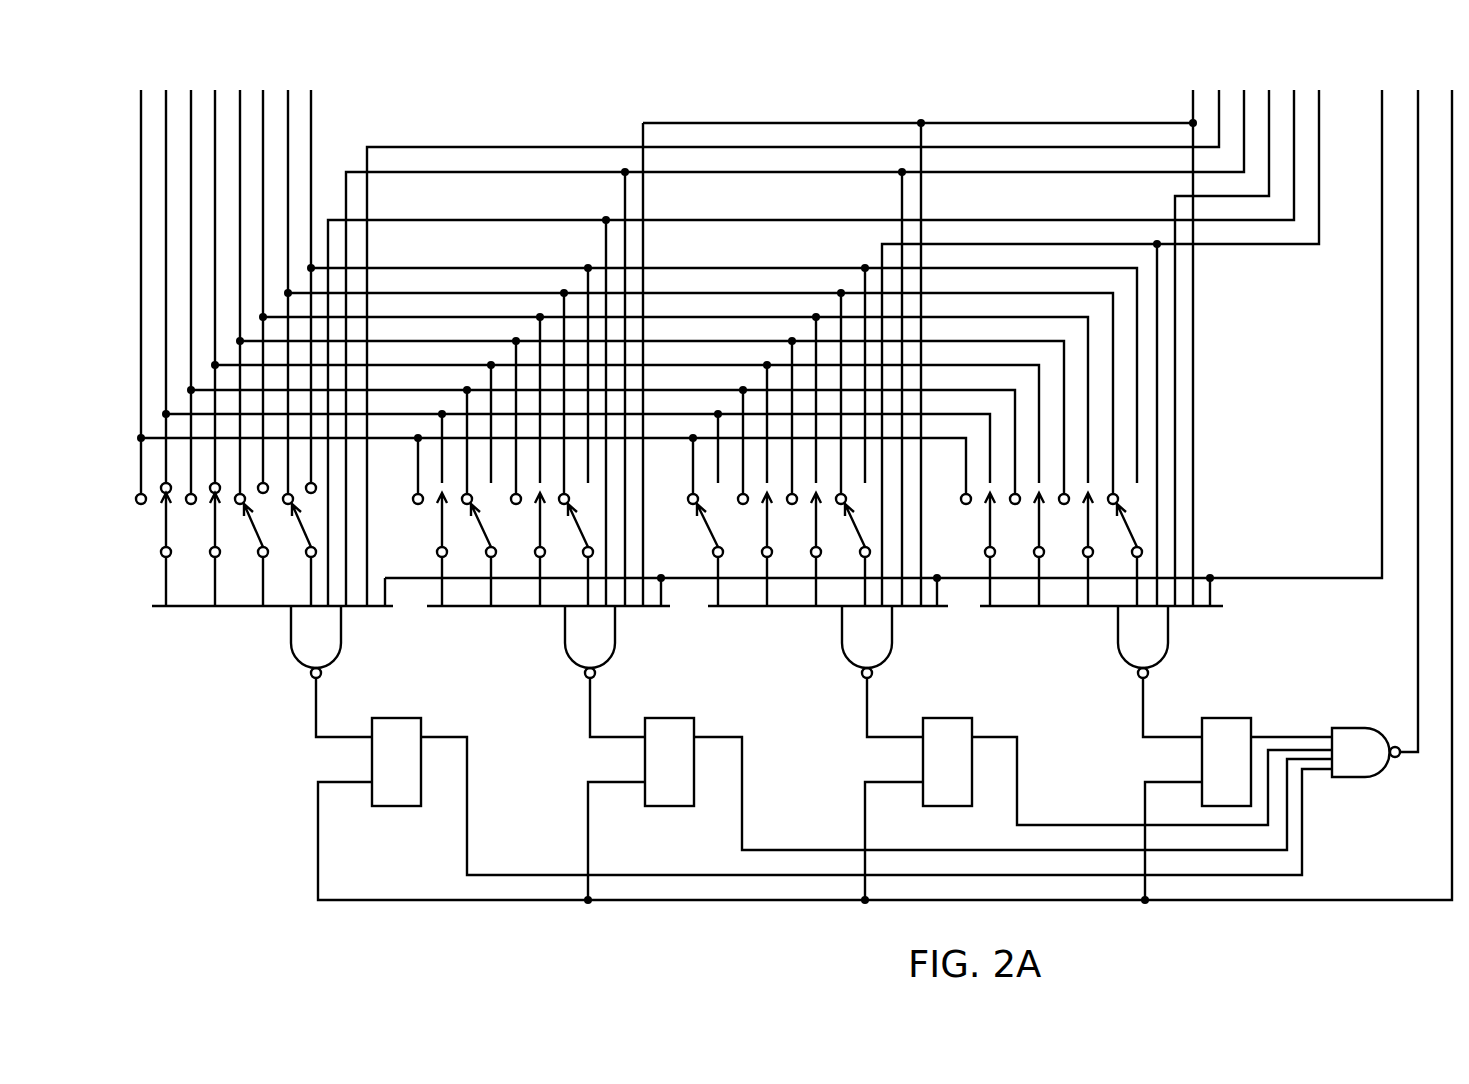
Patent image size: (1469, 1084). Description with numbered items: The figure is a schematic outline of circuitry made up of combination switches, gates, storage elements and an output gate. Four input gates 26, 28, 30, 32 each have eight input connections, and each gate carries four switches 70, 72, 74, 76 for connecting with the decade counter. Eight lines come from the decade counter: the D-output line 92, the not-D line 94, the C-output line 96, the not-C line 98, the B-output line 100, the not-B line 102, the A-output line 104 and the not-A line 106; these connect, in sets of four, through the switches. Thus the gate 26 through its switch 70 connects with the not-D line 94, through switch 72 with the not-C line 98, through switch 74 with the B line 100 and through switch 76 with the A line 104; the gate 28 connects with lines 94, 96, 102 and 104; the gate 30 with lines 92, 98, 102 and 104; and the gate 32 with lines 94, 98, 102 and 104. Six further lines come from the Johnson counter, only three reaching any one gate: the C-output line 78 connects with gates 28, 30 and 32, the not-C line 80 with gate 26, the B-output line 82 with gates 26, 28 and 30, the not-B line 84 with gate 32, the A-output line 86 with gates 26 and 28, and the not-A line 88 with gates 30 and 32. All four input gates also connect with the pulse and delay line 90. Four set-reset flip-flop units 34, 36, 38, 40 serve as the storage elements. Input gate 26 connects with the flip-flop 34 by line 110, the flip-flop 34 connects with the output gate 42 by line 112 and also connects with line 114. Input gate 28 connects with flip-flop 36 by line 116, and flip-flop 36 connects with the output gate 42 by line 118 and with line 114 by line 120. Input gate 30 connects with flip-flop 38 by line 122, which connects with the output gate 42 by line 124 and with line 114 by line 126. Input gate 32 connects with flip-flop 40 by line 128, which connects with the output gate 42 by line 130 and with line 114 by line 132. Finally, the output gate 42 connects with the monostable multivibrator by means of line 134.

The input gate 26 is at (316, 642).
The input gate 28 is at (590, 642).
The input gate 30 is at (867, 642).
The input gate 32 is at (1143, 642).
The set-reset flip-flop unit 34 is at (396, 762).
The set-reset flip-flop unit 36 is at (669, 762).
The set-reset flip-flop unit 38 is at (947, 762).
The set-reset flip-flop unit 40 is at (1226, 762).
The output gate 42 is at (1366, 752).
The switch 70 is at (166, 525).
The switch 72 is at (215, 537).
The switch 74 is at (255, 535).
The switch 76 is at (303, 535).
The input line 78 is at (1193, 105).
The input line 80 is at (1222, 72).
The input line 82 is at (1244, 95).
The input line 84 is at (1270, 188).
The input line 86 is at (1273, 222).
The input line 88 is at (1220, 248).
The pulse and delay line 90 is at (1382, 572).
The line 92 is at (141, 119).
The line 94 is at (166, 142).
The line 96 is at (191, 172).
The line 98 is at (215, 205).
The line 100 is at (240, 245).
The line 102 is at (267, 148).
The line 104 is at (290, 112).
The line 106 is at (313, 97).
The line 110 is at (316, 720).
The line 112 is at (467, 855).
The line 114 is at (318, 862).
The line 116 is at (590, 718).
The line 118 is at (742, 850).
The line 120 is at (588, 858).
The line 122 is at (867, 733).
The line 124 is at (1017, 815).
The line 126 is at (865, 830).
The line 128 is at (1143, 725).
The line 130 is at (1306, 737).
The line 132 is at (1145, 805).
The line 134 is at (1418, 670).